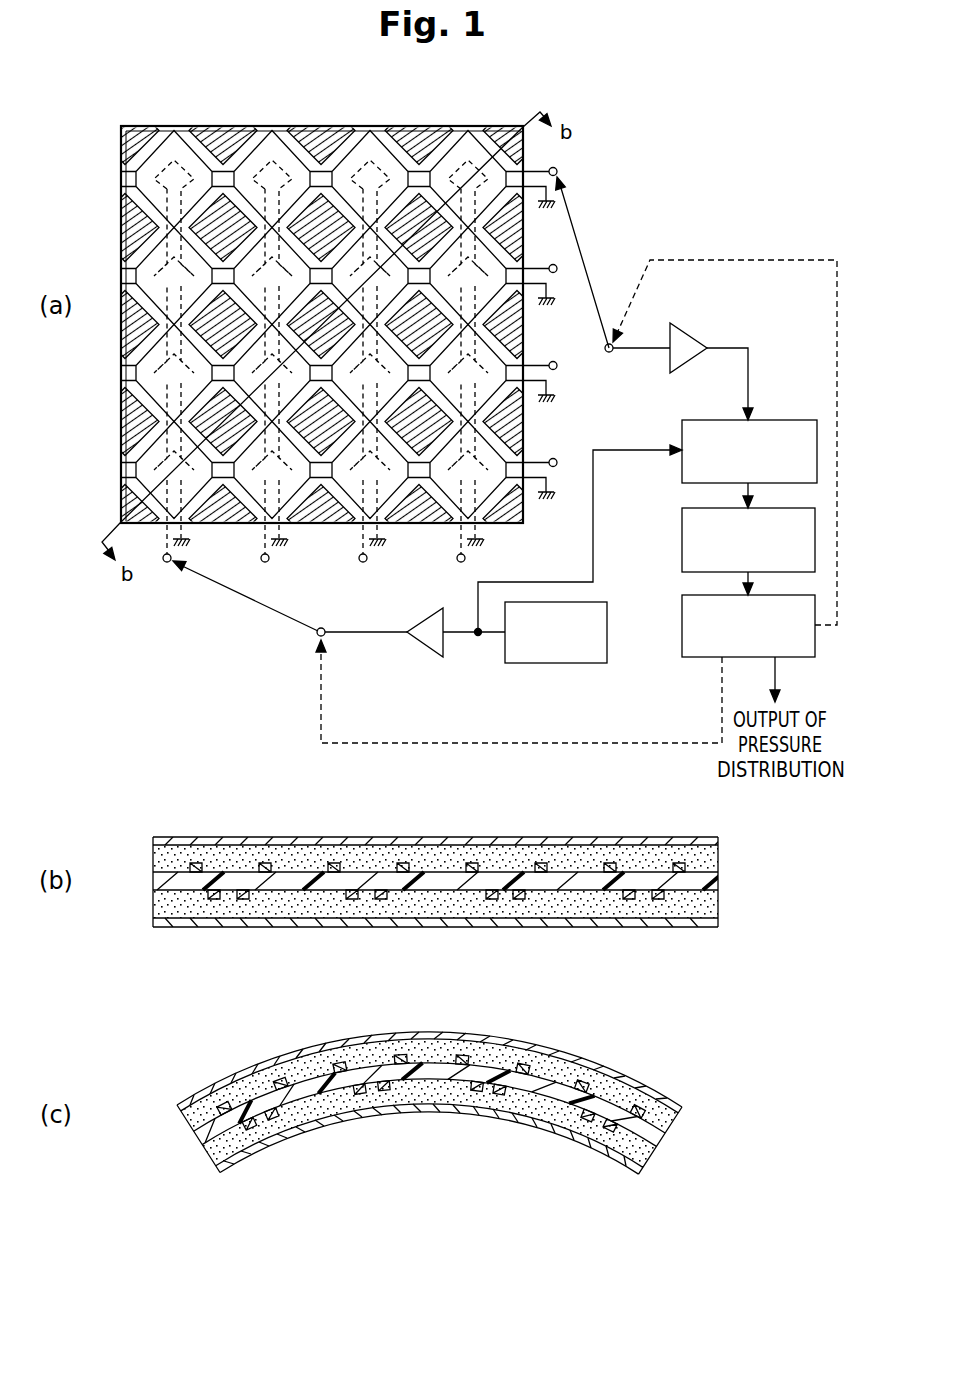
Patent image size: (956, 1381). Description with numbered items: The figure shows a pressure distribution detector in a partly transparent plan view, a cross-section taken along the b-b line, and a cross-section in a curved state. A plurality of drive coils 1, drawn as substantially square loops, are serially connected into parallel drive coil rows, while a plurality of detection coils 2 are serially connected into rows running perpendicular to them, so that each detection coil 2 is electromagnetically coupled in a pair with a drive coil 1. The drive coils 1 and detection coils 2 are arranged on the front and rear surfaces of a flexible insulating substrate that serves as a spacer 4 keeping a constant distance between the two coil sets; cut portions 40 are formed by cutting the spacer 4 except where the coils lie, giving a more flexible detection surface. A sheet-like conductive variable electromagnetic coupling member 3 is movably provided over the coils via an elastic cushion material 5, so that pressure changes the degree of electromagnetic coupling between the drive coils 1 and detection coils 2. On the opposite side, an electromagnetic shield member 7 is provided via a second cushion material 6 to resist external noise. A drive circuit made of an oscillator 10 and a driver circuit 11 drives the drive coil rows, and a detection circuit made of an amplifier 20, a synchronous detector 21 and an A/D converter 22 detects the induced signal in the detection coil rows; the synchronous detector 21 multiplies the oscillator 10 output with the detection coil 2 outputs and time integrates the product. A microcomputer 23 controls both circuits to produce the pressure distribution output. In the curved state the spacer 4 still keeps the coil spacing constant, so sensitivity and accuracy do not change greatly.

The drive coil 1 is at (174, 160).
The detection coil 2 is at (245, 150).
The variable electromagnetic coupling member 3 is at (708, 840).
The spacer 4 is at (718, 878).
The cushion material 5 is at (718, 850).
The cushion material 6 is at (717, 905).
The electromagnetic shield member 7 is at (700, 922).
The oscillator 10 is at (557, 665).
The driver circuit 11 is at (423, 645).
The amplifier 20 is at (690, 336).
The synchronous detector 21 is at (682, 472).
The A/D converter 22 is at (682, 548).
The microcomputer 23 is at (682, 628).
The cut portion 40 is at (406, 135).